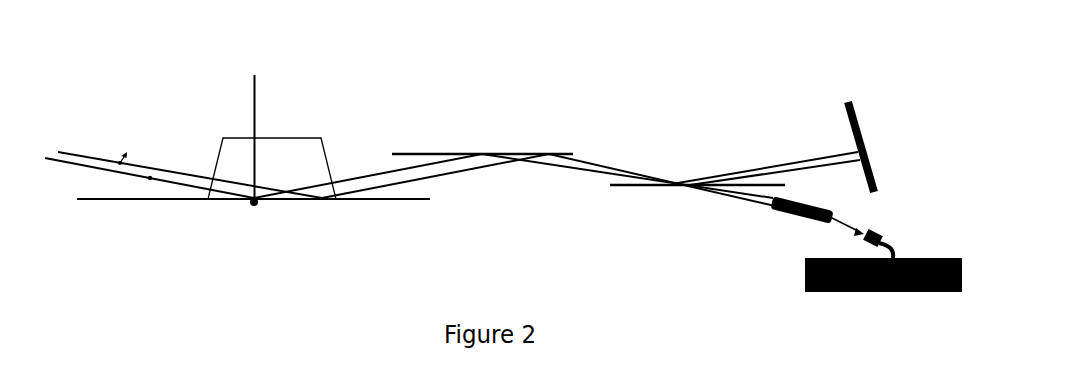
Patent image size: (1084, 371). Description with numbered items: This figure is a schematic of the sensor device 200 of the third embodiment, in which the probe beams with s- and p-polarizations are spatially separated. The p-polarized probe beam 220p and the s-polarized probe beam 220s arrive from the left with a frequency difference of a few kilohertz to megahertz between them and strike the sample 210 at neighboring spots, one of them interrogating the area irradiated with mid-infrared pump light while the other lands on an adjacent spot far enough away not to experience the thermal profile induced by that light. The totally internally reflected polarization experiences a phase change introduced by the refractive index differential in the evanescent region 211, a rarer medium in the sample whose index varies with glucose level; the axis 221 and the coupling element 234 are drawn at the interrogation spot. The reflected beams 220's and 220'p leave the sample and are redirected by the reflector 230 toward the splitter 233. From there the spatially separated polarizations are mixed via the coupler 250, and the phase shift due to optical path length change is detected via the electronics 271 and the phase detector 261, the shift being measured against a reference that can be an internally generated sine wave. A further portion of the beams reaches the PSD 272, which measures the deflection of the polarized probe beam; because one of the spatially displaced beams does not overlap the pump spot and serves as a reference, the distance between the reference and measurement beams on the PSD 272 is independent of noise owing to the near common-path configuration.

The sensor device 200 is at (438, 27).
The sample 210 is at (400, 203).
The evanescent region 211 is at (254, 207).
The surface normal axis 221 is at (239, 129).
The objective / coupling element 234 is at (292, 135).
The p-polarized probe beam 220p is at (189, 163).
The s-polarized probe beam 220s is at (148, 178).
The reflected s-polarized beam 220's is at (556, 164).
The reflected p-polarized beam 220'p is at (591, 180).
The first mirror / beam combiner 230 is at (463, 152).
The beam splitter 233 is at (625, 190).
The coupler 250 is at (802, 216).
The electronics 271 is at (874, 237).
The PSD 272 is at (878, 147).
The phase detector electronics 261 is at (883, 289).